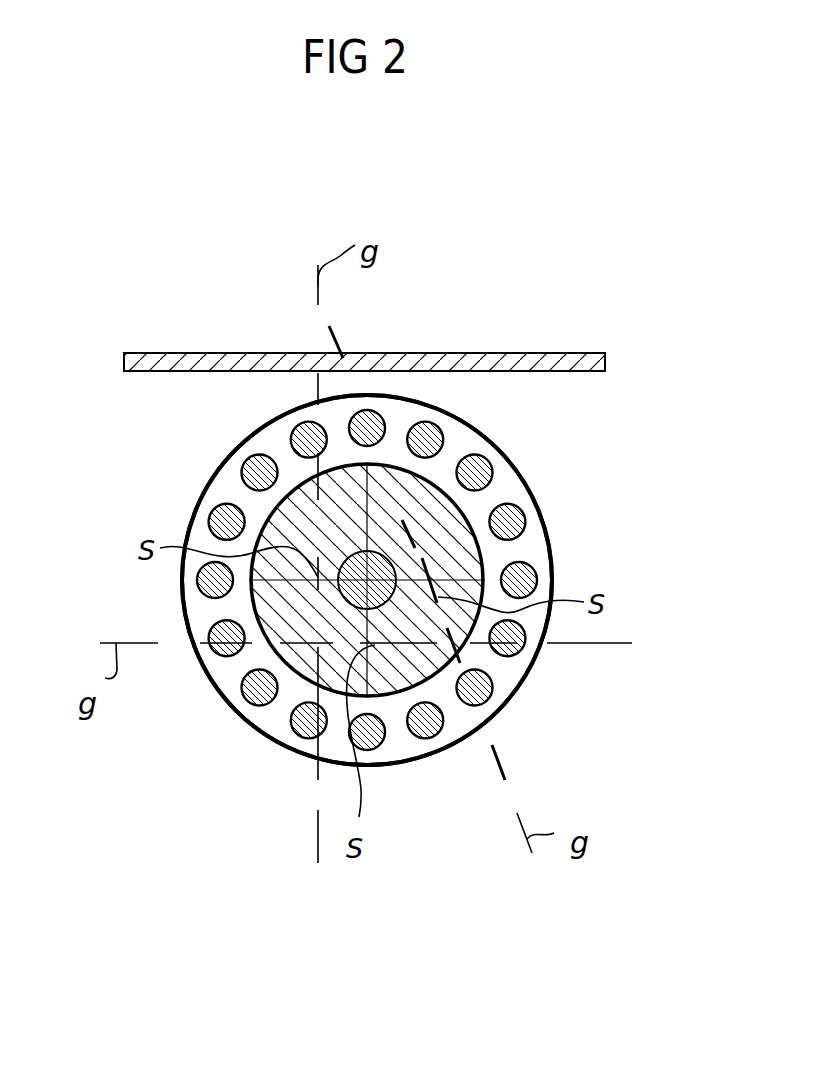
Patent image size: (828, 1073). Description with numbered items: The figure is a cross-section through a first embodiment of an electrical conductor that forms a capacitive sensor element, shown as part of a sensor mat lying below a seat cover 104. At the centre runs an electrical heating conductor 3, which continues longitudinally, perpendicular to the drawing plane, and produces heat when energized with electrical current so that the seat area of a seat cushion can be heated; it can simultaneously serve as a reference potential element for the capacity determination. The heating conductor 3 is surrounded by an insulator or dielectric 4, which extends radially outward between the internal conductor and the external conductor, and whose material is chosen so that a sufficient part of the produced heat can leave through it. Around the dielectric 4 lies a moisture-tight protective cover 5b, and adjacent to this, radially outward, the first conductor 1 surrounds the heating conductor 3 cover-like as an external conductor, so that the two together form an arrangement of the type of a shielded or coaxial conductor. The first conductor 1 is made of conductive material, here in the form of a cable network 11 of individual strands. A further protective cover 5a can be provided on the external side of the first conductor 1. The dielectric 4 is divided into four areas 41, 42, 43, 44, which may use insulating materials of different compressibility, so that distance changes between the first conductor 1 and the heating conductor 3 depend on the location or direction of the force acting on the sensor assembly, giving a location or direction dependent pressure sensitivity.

The seat cover 104 is at (158, 356).
The first conductor 1 is at (296, 740).
The protective cover 5a is at (553, 558).
The protective cover 5b is at (482, 548).
The dielectric 4 is at (300, 512).
The area of the dielectric 41 is at (435, 523).
The area of the dielectric 42 is at (439, 645).
The area of the dielectric 43 is at (330, 636).
The area of the dielectric 44 is at (334, 534).
The heating conductor 3 is at (392, 563).
The cable network 11 is at (476, 705).